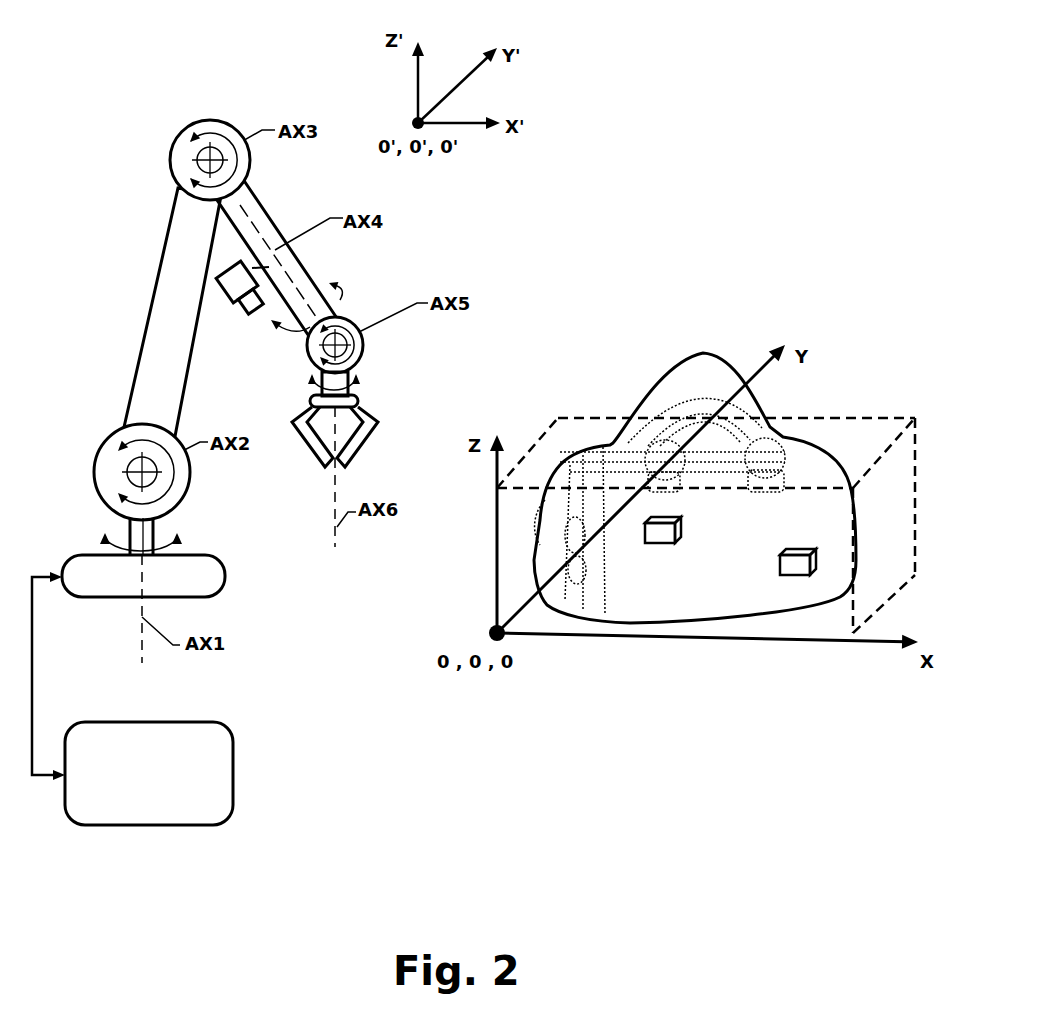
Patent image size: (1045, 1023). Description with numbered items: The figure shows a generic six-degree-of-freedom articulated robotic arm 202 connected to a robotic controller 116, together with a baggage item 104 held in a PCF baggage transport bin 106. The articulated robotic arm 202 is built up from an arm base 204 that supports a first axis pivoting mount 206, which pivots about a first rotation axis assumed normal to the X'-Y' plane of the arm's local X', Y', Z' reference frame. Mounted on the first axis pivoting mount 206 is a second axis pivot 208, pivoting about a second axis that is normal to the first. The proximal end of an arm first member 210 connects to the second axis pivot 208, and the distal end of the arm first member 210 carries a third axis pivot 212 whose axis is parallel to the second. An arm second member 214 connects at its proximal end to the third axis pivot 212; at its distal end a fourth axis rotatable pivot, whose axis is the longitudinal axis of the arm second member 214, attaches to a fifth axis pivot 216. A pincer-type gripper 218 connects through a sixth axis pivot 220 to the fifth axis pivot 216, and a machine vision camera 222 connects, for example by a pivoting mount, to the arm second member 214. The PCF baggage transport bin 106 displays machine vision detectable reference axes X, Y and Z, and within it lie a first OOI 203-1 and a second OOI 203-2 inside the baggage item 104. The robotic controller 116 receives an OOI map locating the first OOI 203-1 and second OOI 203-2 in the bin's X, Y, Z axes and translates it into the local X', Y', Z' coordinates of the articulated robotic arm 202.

The baggage item 104 is at (719, 476).
The PCF baggage transport bin 106 is at (725, 489).
The robotic controller 116 is at (175, 760).
The articulated robotic arm 202 is at (249, 376).
The first OOI 203-1 is at (626, 606).
The second OOI 203-2 is at (750, 619).
The arm base 204 is at (166, 594).
The first axis pivoting mount 206 is at (175, 522).
The second axis pivot 208 is at (116, 465).
The arm first member 210 is at (160, 320).
The third axis pivot 212 is at (225, 145).
The arm second member 214 is at (272, 252).
The fifth axis pivot 216 is at (367, 318).
The gripper 218 is at (373, 466).
The sixth axis pivot 220 is at (373, 373).
The machine vision camera 222 is at (255, 322).